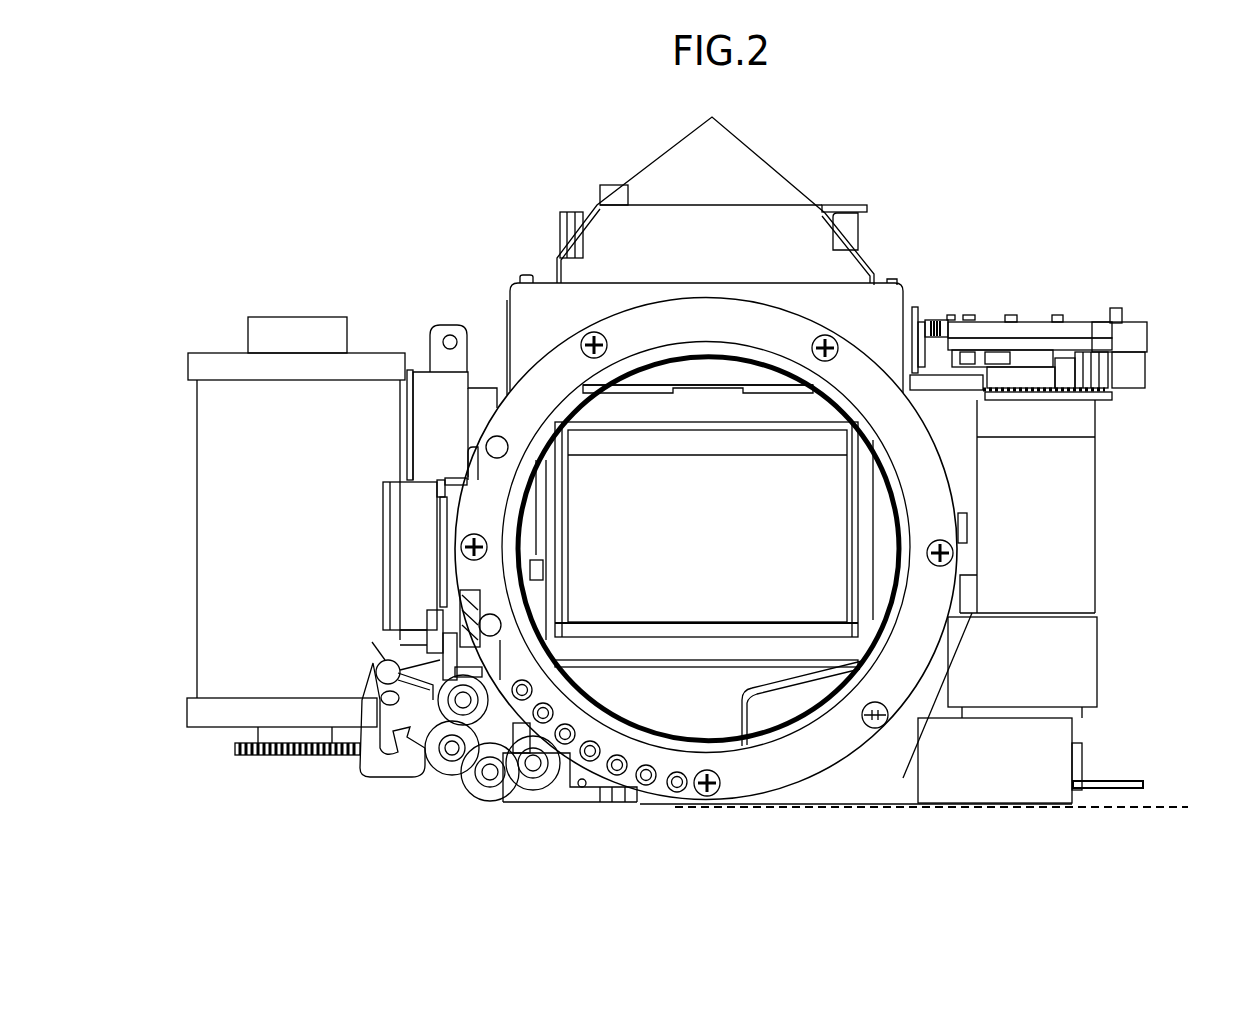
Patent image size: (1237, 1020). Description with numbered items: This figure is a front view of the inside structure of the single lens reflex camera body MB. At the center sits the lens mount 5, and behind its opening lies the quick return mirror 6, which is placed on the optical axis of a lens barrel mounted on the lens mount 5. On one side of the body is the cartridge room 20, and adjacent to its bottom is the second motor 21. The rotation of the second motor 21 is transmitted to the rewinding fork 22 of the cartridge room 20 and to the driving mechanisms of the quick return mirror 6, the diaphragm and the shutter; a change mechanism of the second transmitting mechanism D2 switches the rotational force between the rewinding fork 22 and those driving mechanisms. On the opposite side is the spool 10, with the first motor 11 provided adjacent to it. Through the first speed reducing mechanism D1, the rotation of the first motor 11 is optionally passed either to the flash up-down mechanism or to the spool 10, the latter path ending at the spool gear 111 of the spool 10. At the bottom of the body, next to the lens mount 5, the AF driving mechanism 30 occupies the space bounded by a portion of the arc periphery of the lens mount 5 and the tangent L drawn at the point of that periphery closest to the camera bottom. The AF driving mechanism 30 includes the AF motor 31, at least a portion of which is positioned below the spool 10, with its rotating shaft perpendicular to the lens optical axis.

The main body MB is at (526, 306).
The lens mount 5 is at (866, 398).
The quick return mirror 6 is at (768, 598).
The cartridge room 20 is at (222, 537).
The rewinding fork 22 is at (234, 748).
The second transmitting mechanism D2 is at (390, 786).
The second motor 21 is at (545, 790).
The first speed reducing mechanism D1 is at (1034, 306).
The spool gear 111 is at (1070, 403).
The first motor 11 is at (963, 473).
The spool 10 is at (1068, 545).
The AF motor 31 is at (978, 783).
The AF driving mechanism 30 is at (884, 812).
The tangent L is at (1162, 807).